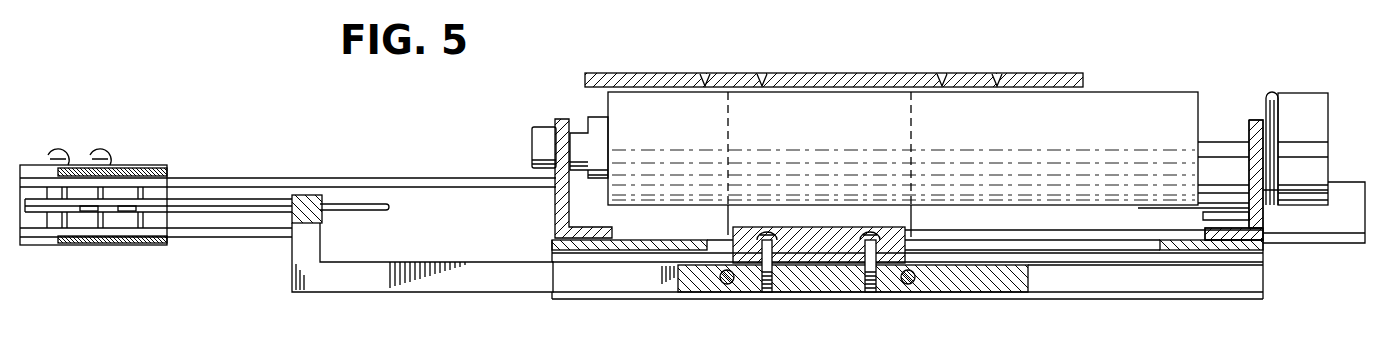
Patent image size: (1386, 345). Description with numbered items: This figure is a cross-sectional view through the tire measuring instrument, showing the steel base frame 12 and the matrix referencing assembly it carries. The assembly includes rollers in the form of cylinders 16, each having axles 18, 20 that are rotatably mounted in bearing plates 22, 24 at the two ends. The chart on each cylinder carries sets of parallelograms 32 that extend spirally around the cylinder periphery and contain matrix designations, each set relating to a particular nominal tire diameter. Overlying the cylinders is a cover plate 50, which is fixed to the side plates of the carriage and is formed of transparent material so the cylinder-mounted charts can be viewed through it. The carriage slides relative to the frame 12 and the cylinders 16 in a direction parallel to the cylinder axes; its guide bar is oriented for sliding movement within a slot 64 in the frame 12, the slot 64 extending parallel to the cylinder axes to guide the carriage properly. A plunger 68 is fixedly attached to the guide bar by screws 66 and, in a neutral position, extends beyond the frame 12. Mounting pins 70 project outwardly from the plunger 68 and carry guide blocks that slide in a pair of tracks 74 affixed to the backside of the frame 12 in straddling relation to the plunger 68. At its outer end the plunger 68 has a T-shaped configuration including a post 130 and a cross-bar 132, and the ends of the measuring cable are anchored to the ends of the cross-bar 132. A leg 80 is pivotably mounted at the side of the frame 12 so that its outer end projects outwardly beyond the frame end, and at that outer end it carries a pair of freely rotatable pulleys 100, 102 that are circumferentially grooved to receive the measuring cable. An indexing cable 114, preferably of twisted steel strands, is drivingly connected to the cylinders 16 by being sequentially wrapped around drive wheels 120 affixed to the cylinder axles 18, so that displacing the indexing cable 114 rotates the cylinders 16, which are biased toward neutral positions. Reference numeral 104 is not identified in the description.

The base frame 12 is at (674, 242).
The cylinders 16 is at (615, 108).
The axle 18 is at (1232, 146).
The axle 20 is at (538, 132).
The bearing plate 22 is at (563, 120).
The bearing plate 24 is at (1255, 120).
The parallelograms 32 is at (762, 74).
The cover plate 50 is at (893, 74).
The slot 64 is at (830, 248).
The screws 66 is at (871, 284).
The plunger 68 is at (828, 280).
The mounting pins 70 is at (732, 296).
The tracks 74 is at (645, 299).
The leg 80 is at (199, 177).
The pulley 100 is at (127, 215).
The pulley 102 is at (87, 213).
The rod 104 is at (245, 205).
The indexing cable 114 is at (1148, 210).
The drive wheels 120 is at (1318, 122).
The post 130 is at (295, 278).
The cross-bar 132 is at (310, 195).